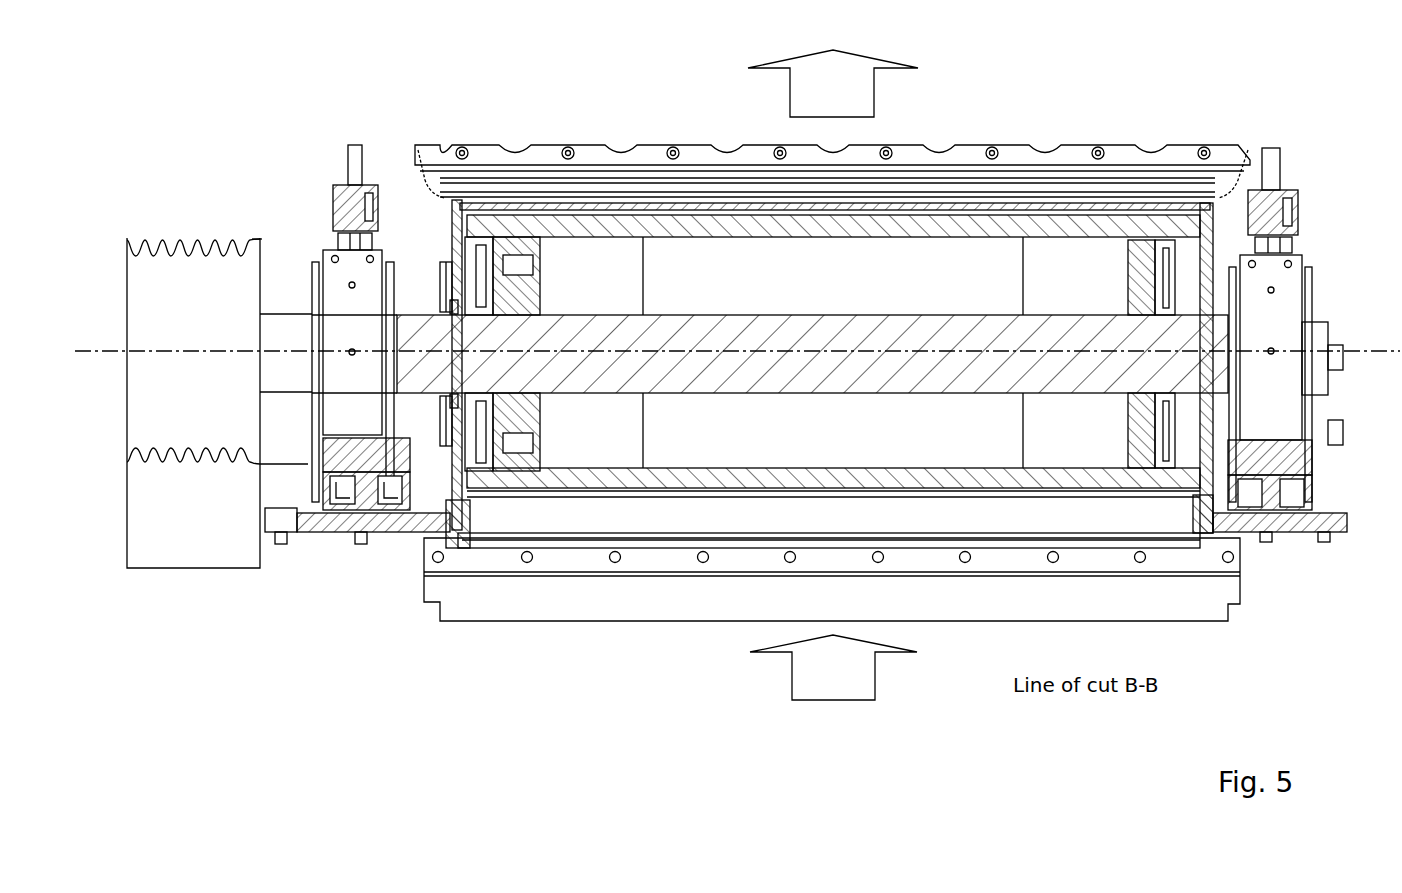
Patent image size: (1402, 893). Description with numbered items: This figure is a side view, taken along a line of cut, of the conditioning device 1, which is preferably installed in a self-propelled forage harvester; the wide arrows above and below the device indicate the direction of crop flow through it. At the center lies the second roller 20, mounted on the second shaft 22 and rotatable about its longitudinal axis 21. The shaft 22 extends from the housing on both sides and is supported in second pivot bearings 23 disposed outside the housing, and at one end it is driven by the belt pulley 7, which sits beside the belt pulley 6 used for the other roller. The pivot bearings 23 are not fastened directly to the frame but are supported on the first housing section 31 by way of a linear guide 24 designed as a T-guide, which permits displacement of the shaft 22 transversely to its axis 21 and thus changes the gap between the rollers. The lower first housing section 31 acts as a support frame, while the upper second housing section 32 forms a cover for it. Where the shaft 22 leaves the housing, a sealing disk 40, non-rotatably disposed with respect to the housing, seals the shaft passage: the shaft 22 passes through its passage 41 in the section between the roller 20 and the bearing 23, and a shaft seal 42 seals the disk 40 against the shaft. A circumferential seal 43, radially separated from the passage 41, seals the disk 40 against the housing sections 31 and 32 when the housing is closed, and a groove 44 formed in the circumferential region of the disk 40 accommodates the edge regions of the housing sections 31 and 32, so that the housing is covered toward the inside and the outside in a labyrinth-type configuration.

The conditioning device 1 is at (538, 638).
The belt pulley 6 is at (175, 548).
The belt pulley 7 is at (210, 295).
The second roller 20 is at (718, 228).
The longitudinal axis 21 is at (97, 350).
The second shaft 22 is at (912, 332).
The second pivot bearing 23 is at (321, 254).
The linear guide 24 is at (362, 490).
The first housing section 31 is at (647, 563).
The second housing section 32 is at (540, 172).
The sealing disk 40 is at (437, 308).
The passage 41 is at (395, 250).
The shaft seal 42 is at (455, 320).
The circumferential seal 43 is at (463, 257).
The groove 44 is at (455, 298).